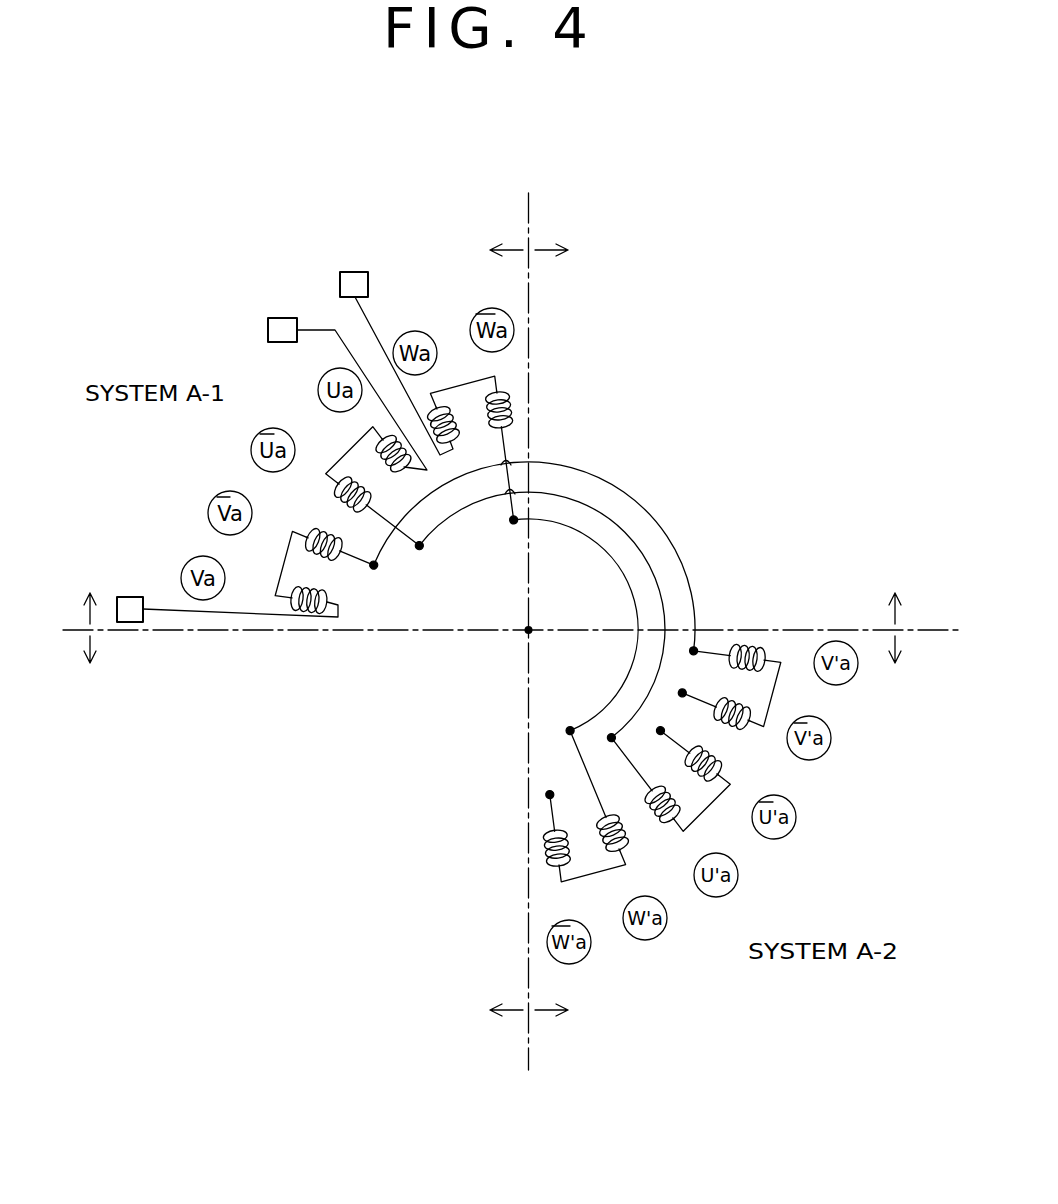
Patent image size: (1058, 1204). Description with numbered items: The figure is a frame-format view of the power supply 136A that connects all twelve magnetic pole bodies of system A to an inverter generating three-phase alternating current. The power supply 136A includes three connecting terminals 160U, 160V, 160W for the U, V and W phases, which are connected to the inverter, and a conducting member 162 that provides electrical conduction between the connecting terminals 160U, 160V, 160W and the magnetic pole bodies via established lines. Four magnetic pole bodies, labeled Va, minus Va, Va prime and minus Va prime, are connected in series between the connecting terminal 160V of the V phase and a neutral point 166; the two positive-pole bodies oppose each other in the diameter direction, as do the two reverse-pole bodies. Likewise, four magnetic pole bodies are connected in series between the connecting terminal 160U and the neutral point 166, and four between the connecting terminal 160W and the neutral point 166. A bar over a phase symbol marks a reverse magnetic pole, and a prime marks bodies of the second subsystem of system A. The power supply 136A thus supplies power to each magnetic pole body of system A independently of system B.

The power supply 136A is at (667, 399).
The conducting member 162 is at (668, 537).
The neutral point 166 is at (598, 760).
The connecting terminal 160U is at (283, 332).
The connecting terminal 160V is at (130, 607).
The connecting terminal 160W is at (353, 285).